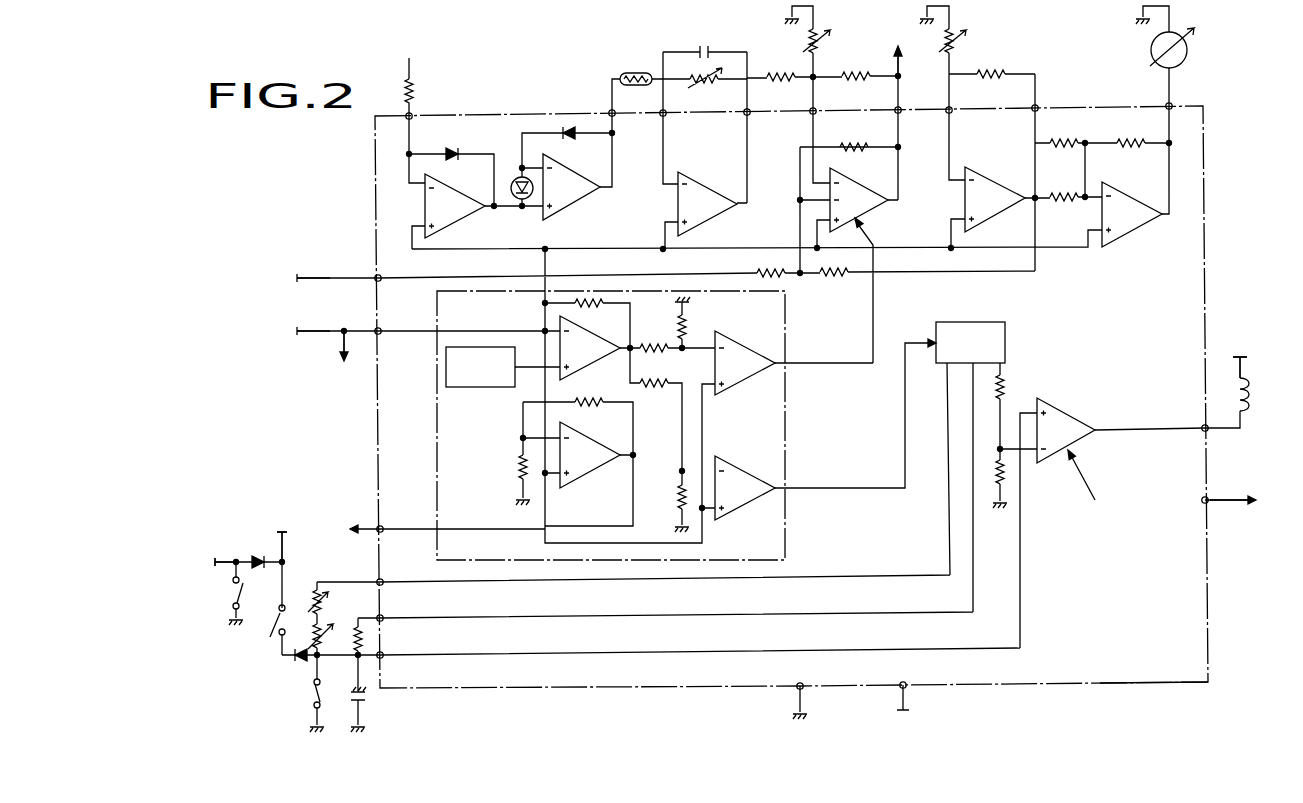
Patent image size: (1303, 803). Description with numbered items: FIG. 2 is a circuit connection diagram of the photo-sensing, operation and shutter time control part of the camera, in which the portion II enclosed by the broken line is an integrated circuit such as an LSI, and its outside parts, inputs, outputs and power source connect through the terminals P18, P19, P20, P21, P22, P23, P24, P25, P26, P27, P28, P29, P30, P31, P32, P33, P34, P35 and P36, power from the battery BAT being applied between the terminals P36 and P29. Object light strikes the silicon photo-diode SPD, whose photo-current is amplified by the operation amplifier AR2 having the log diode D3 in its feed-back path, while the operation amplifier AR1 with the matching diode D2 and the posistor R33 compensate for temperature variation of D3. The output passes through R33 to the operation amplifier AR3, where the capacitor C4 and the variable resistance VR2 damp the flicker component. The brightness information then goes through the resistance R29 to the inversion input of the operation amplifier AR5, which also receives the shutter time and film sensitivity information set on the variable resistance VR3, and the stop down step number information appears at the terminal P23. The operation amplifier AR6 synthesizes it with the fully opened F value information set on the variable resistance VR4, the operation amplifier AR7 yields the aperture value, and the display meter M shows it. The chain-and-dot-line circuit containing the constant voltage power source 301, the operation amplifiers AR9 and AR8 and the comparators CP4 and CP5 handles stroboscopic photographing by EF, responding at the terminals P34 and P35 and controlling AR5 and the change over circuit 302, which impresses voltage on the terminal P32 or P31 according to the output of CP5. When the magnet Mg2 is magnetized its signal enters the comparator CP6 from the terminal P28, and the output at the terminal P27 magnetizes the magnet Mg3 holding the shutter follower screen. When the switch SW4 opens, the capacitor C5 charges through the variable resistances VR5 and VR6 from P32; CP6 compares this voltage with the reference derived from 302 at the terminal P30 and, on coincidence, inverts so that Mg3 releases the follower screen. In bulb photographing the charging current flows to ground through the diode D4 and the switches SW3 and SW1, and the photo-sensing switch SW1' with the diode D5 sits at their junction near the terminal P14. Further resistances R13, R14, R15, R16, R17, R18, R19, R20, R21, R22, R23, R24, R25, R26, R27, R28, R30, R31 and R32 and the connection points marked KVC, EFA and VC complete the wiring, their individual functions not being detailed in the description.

The terminal P14 is at (214, 563).
The terminal P18 is at (423, 125).
The terminal P19 is at (626, 123).
The terminal P20 is at (677, 122).
The terminal P21 is at (761, 121).
The terminal P22 is at (827, 121).
The terminal P23 is at (912, 120).
The terminal P24 is at (963, 120).
The terminal P25 is at (1049, 118).
The terminal P26 is at (1183, 117).
The terminal P27 is at (1195, 419).
The terminal P28 is at (1194, 492).
The terminal P29 is at (804, 677).
The terminal P30 is at (393, 647).
The terminal P31 is at (393, 610).
The terminal P32 is at (393, 574).
The terminal P33 is at (393, 520).
The terminal P34 is at (392, 324).
The terminal P35 is at (392, 271).
The terminal P36 is at (907, 677).
The resistor R13 is at (591, 312).
The resistor R14 is at (513, 469).
The resistor R15 is at (589, 395).
The resistor R16 is at (654, 339).
The resistor R17 is at (695, 327).
The resistor R18 is at (654, 375).
The resistor R19 is at (672, 497).
The resistor R20 is at (772, 266).
The resistor R21 is at (834, 284).
The resistor R22 is at (854, 139).
The resistor R23 is at (1064, 154).
The resistor R24 is at (1064, 208).
The resistor R25 is at (1131, 154).
The resistor R26 is at (1012, 387).
The resistor R27 is at (990, 472).
The resistor R28 is at (423, 97).
The resistance R29 is at (782, 88).
The resistor R30 is at (857, 87).
The resistor R31 is at (992, 85).
The resistor R32 is at (347, 639).
The posistor R33 is at (636, 70).
The variable resistance VR2 is at (707, 87).
The variable resistance VR3 is at (827, 44).
The variable resistance VR4 is at (962, 43).
The variable resistance VR5 is at (333, 603).
The variable resistance VR6 is at (310, 636).
The capacitor C4 is at (705, 43).
The capacitor C5 is at (368, 701).
The diode D2 is at (451, 146).
The log diode D3 is at (573, 144).
The diode D4 is at (299, 667).
The diode D5 is at (258, 554).
The operation amplifier AR1 is at (455, 206).
The operation amplifier AR2 is at (571, 187).
The operation amplifier AR3 is at (707, 204).
The operation amplifier AR5 is at (859, 200).
The operation amplifier AR6 is at (995, 199).
The operation amplifier AR7 is at (1132, 214).
The operation amplifier AR8 is at (590, 455).
The operation amplifier AR9 is at (590, 348).
The comparator CP4 is at (788, 395).
The comparator CP5 is at (795, 517).
The comparator CP6 is at (1080, 515).
The silicon photo-diode SPD is at (521, 204).
The display meter M is at (1178, 48).
The switch SW1 is at (283, 538).
The switch for photo-sensing only SW1' is at (224, 593).
The switch SW3 is at (268, 621).
The switch SW4 is at (334, 693).
The magnet Mg2 is at (1249, 501).
The magnet Mg3 is at (1228, 394).
The power battery BAT is at (1237, 358).
The constant voltage power source 301 is at (320, 421).
The change over circuit 302 is at (1020, 305).
The circuit part II is at (1015, 670).
The constant voltage terminal KVC is at (374, 290).
The stroboscopic photographing EF is at (296, 284).
The EFA signal terminal EFA is at (296, 331).
The VC voltage VC is at (343, 356).